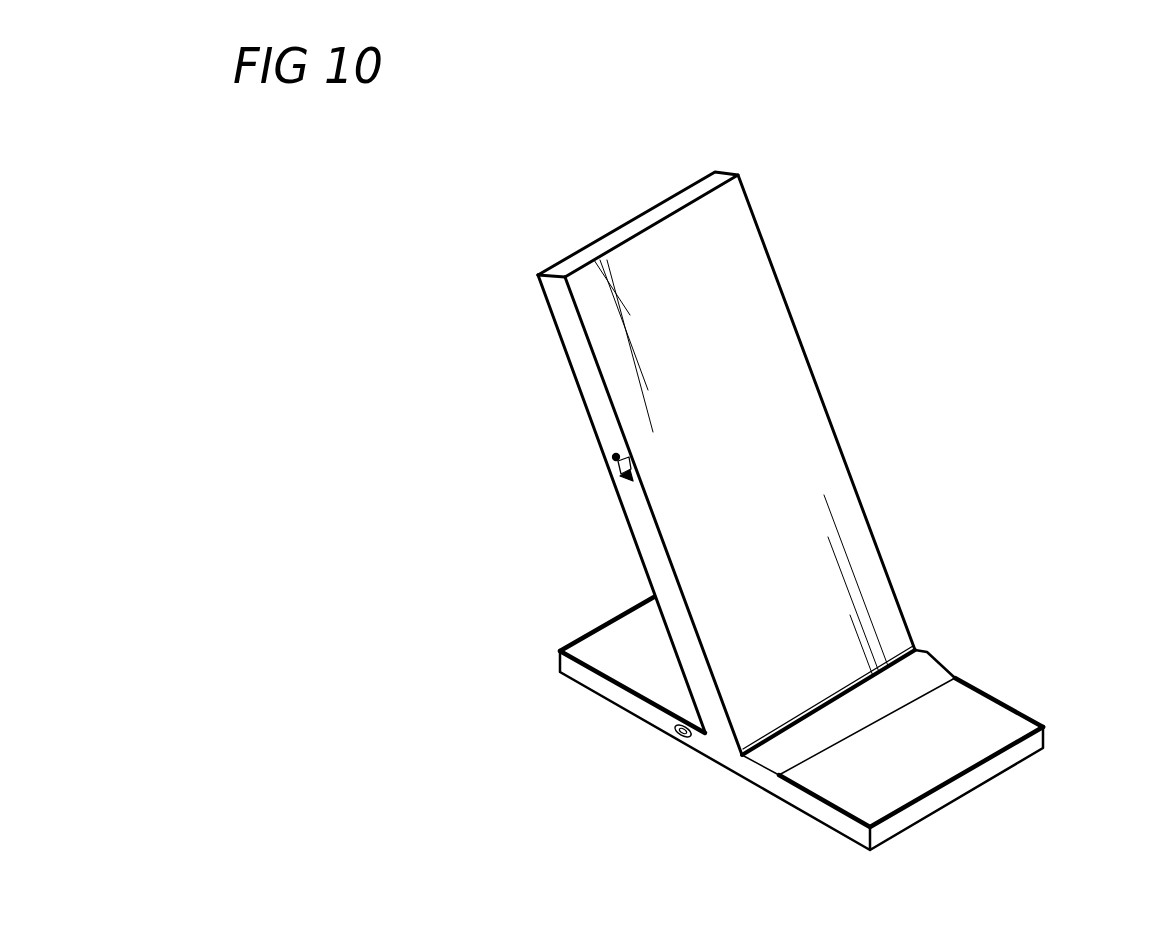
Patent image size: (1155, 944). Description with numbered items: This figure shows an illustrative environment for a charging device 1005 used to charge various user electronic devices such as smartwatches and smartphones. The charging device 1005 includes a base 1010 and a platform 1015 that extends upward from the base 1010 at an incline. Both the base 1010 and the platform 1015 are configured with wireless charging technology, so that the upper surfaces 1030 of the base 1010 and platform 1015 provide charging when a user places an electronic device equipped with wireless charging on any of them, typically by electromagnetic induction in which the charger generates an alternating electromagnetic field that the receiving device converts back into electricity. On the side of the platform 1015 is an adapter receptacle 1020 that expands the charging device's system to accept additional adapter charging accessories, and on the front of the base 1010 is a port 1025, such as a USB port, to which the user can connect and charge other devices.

The charging device 1005 is at (793, 456).
The base 1010 is at (848, 723).
The platform 1015 is at (842, 452).
The adapter receptacle 1020 is at (612, 462).
The port 1025 is at (675, 735).
The upper surfaces 1030 is at (857, 548).